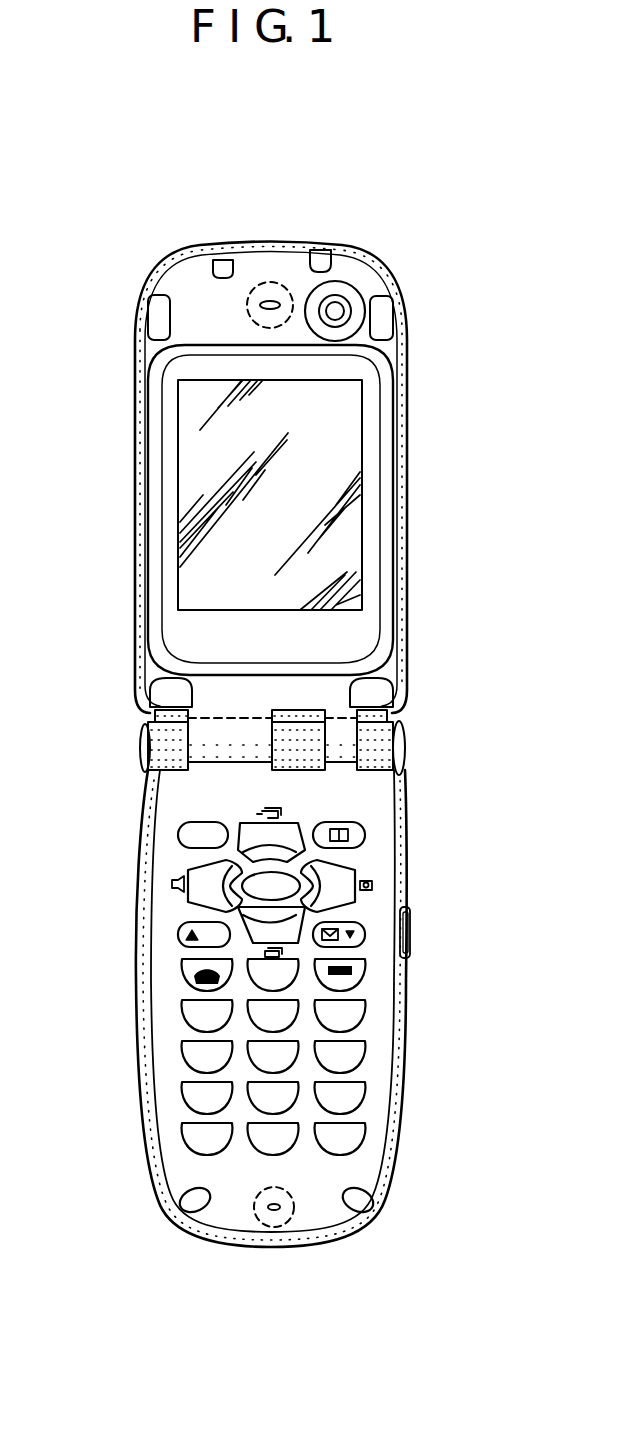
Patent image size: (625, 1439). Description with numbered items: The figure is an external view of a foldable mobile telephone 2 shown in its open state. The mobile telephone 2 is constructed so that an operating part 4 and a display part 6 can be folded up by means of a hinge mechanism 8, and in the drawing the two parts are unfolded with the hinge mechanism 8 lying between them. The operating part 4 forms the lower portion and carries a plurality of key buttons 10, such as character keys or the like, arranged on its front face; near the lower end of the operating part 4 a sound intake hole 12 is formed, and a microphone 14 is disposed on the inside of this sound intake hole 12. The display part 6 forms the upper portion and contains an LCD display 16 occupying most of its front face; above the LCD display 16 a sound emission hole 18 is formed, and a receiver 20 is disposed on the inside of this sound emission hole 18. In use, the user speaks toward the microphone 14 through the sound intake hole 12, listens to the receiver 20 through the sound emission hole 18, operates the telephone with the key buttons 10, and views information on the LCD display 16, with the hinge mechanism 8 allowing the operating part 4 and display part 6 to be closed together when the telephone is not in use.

The mobile telephone 2 is at (450, 1227).
The operating part 4 is at (383, 1072).
The display part 6 is at (408, 563).
The hinge mechanism 8 is at (407, 747).
The key buttons 10 is at (120, 813).
The sound intake hole 12 is at (274, 1212).
The microphone 14 is at (290, 1225).
The LCD display 16 is at (178, 592).
The sound emission hole 18 is at (270, 300).
The receiver 20 is at (283, 283).